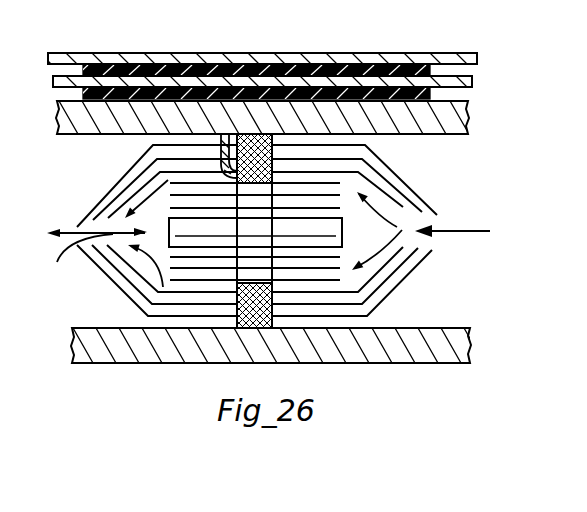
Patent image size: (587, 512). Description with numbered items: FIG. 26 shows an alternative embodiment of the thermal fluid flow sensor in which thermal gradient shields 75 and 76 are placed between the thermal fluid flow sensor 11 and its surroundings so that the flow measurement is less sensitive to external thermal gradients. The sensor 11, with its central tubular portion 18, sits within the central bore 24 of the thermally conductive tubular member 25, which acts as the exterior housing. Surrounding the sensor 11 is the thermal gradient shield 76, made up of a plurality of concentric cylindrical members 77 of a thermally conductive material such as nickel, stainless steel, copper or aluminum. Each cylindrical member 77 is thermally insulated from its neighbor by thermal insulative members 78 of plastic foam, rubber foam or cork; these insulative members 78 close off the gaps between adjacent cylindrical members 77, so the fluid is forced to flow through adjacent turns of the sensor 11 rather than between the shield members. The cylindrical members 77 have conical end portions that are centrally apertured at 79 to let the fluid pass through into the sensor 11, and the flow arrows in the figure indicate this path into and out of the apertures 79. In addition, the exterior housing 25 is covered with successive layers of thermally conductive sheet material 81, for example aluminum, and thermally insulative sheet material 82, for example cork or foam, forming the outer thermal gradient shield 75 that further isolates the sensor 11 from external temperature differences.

The thermal fluid flow sensor 11 is at (72, 251).
The central tubular portion 18 is at (342, 231).
The central bore 24 is at (252, 134).
The thermally conductive tubular member 25 is at (103, 135).
The thermal gradient shield 75 is at (272, 47).
The thermal gradient shield 76 is at (107, 283).
The concentric cylindrical members 77 is at (395, 258).
The thermal insulative members 78 is at (222, 137).
The central apertures 79 is at (78, 228).
The thermally conductive layers 81 is at (233, 85).
The thermally insulative layers 82 is at (150, 100).